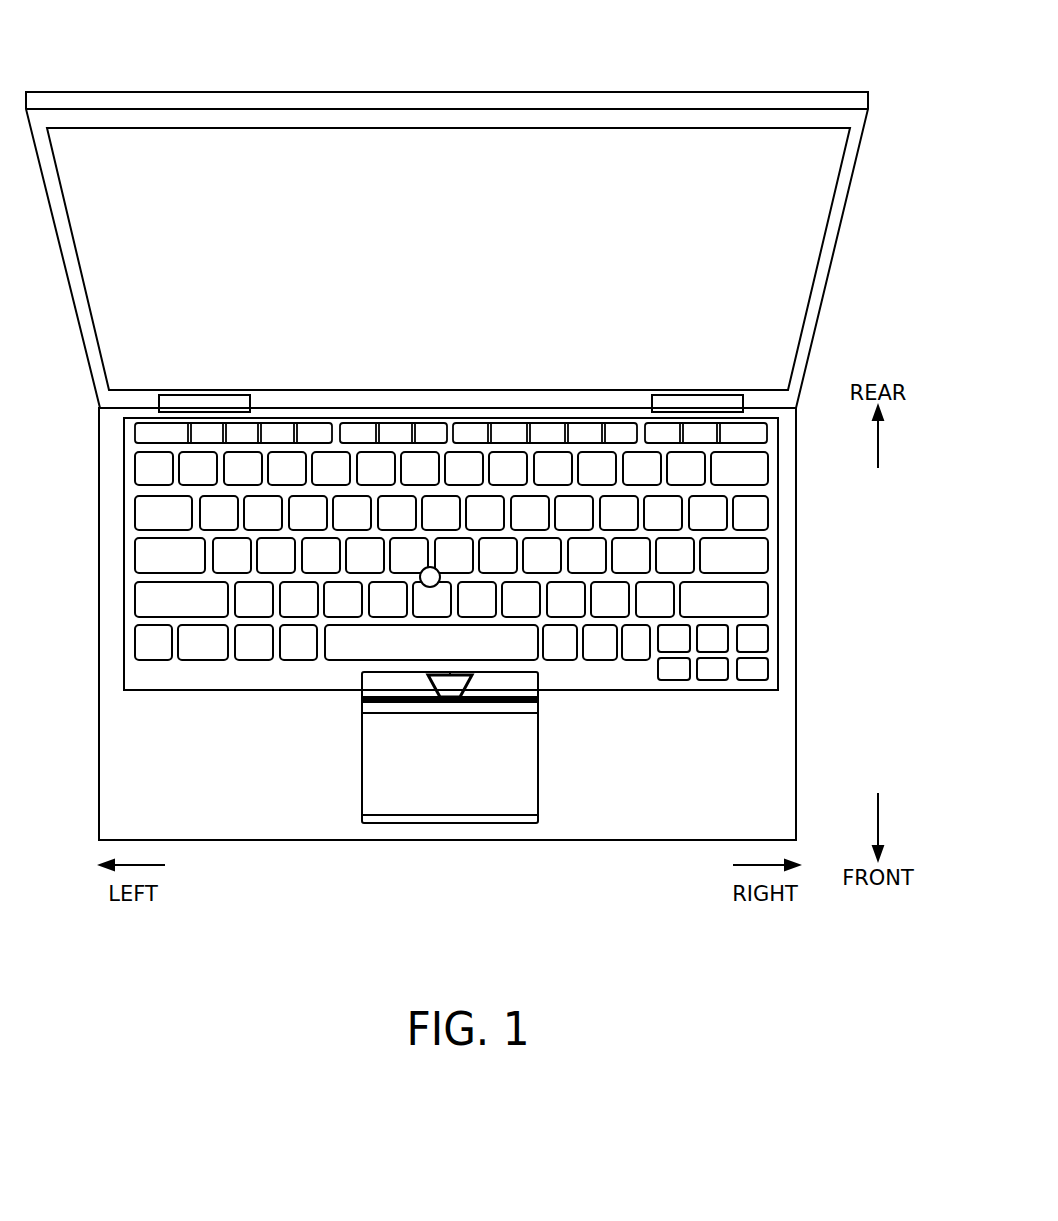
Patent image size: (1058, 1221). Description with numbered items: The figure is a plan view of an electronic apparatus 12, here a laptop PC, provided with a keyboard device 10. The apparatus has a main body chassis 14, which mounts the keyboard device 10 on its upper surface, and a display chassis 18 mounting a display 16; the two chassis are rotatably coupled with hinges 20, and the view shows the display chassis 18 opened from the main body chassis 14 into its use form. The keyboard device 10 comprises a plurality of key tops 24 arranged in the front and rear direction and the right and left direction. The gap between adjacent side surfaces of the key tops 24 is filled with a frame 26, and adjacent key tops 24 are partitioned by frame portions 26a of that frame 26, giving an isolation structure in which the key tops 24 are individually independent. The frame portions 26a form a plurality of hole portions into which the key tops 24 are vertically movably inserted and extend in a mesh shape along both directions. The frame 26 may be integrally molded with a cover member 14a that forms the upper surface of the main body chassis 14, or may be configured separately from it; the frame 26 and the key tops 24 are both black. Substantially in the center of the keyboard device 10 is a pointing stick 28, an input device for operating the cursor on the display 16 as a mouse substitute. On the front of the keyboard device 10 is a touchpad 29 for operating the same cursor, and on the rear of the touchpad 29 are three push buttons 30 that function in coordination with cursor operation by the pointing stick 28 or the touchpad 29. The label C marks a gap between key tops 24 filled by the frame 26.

The keyboard device 10 is at (125, 529).
The electronic apparatus 12 is at (46, 31).
The main body chassis 14 is at (100, 785).
The cover member 14a is at (118, 748).
The display 16 is at (795, 245).
The display chassis 18 is at (851, 177).
The hinges 20 is at (188, 395).
The key tops 24 is at (338, 468).
The frame 26 is at (198, 688).
The frame portions 26a is at (263, 465).
The pointing stick 28 is at (430, 577).
The touchpad 29 is at (405, 803).
The push buttons 30 is at (500, 680).
The clearance between key and frame C is at (438, 466).